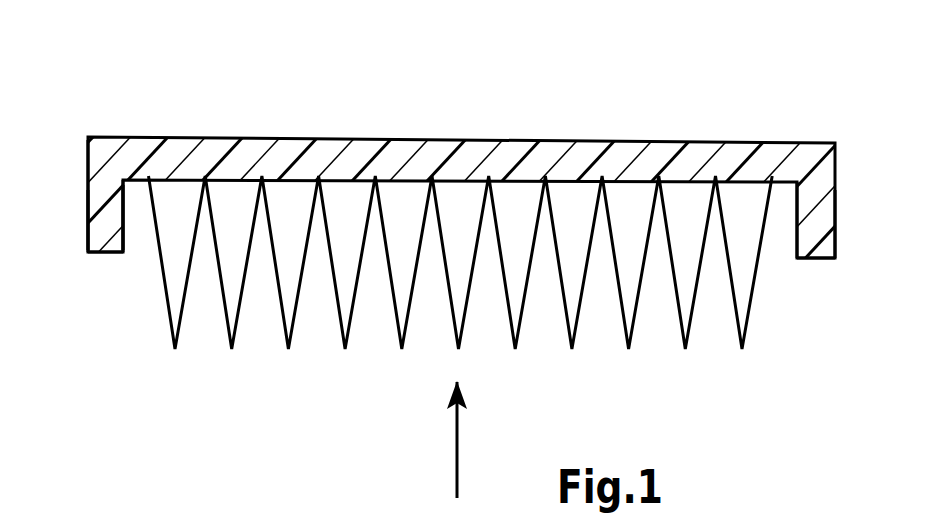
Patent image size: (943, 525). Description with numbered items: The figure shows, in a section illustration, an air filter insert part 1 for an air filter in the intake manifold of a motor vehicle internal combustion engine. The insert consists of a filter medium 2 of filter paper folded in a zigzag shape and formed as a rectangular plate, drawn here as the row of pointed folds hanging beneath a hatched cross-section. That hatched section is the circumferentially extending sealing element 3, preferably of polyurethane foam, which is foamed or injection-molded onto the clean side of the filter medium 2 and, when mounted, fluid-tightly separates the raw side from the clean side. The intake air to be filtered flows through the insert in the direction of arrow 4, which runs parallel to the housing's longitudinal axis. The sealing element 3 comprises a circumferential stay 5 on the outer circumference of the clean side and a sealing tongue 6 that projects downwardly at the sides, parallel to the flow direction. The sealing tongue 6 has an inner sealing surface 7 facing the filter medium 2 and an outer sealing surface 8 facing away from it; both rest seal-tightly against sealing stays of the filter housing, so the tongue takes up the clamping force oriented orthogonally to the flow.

The air filter insert part 1 is at (791, 69).
The filter medium 2 is at (758, 307).
The sealing element 3 is at (471, 191).
The arrow (flow-through direction) 4 is at (455, 468).
The stay 5 is at (675, 167).
The sealing tongue 6 is at (103, 252).
The inner sealing surface 7 is at (127, 232).
The outer sealing surface 8 is at (88, 193).